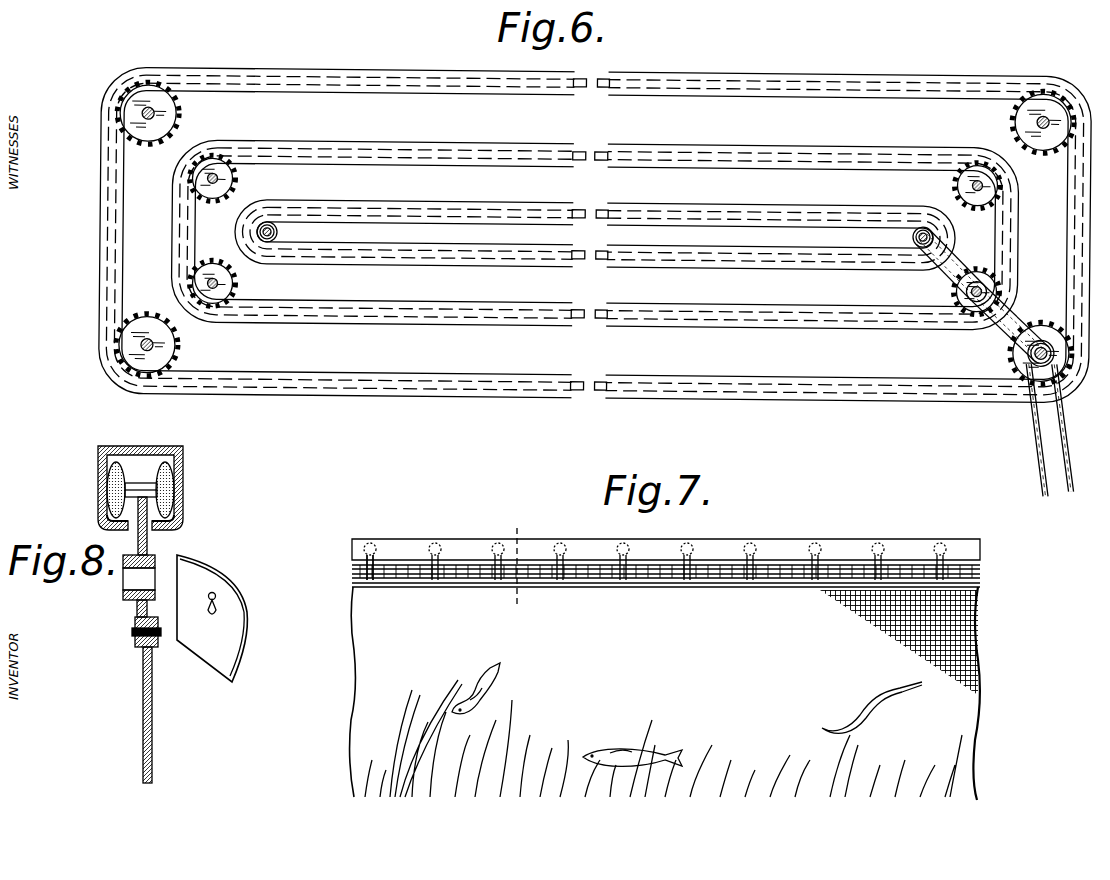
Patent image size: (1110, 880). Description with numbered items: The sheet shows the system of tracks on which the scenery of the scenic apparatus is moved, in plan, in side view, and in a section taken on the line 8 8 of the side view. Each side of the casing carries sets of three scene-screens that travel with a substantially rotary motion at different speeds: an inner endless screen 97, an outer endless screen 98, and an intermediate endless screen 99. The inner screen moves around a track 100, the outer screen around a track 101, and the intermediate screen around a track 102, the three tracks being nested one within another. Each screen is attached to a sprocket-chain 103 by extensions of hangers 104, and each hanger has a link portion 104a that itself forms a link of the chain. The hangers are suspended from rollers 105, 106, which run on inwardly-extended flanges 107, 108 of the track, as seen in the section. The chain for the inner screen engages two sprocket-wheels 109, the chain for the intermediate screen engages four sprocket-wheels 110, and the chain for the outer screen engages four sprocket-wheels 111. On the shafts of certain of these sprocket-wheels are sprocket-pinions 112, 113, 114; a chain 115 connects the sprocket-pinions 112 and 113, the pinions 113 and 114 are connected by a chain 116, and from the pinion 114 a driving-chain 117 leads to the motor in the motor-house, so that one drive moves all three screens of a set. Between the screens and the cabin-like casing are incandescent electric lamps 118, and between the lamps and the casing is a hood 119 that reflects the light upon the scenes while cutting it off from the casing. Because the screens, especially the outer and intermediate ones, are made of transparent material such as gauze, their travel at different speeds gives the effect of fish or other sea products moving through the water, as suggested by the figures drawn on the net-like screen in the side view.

In FIG. 7, the section line 8 8 is at (516, 567).
In FIG. 6, the inner endless screen 97 is at (604, 264).
In FIG. 6, the outer endless screen 98 is at (591, 396).
In FIG. 8, the outer endless screen 98 is at (153, 735).
In FIG. 7, the outer endless screen 98 is at (352, 690).
In FIG. 6, the intermediate endless screen 99 is at (606, 324).
In FIG. 6, the track 100 is at (690, 268).
In FIG. 6, the track 101 is at (805, 398).
In FIG. 8, the track 101 is at (148, 447).
In FIG. 7, the track 101 is at (806, 541).
In FIG. 6, the track 102 is at (790, 327).
In FIG. 7, the sprocket-chain 103 is at (352, 571).
In FIG. 8, the hanger 104 is at (150, 548).
In FIG. 7, the hanger 104 is at (392, 560).
In FIG. 8, the link portion of hanger 104a is at (123, 577).
In FIG. 8, the roller 105 is at (172, 478).
In FIG. 8, the roller 106 is at (105, 476).
In FIG. 8, the inwardly-extended flange 107 is at (180, 521).
In FIG. 8, the inwardly-extended flange 108 is at (100, 518).
In FIG. 6, the sprocket-wheel 109 is at (280, 235).
In FIG. 6, the sprocket-wheel 110 is at (238, 182).
In FIG. 6, the sprocket-wheel 111 is at (181, 124).
In FIG. 6, the sprocket-pinion 112 is at (951, 247).
In FIG. 6, the sprocket-pinion 113 is at (1001, 294).
In FIG. 6, the sprocket-pinion 114 is at (1022, 356).
In FIG. 6, the chain 115 is at (936, 275).
In FIG. 6, the chain 116 is at (1016, 325).
In FIG. 6, the driving-chain 117 is at (1038, 455).
In FIG. 8, the incandescent electric lamp 118 is at (218, 596).
In FIG. 8, the hood 119 is at (247, 617).